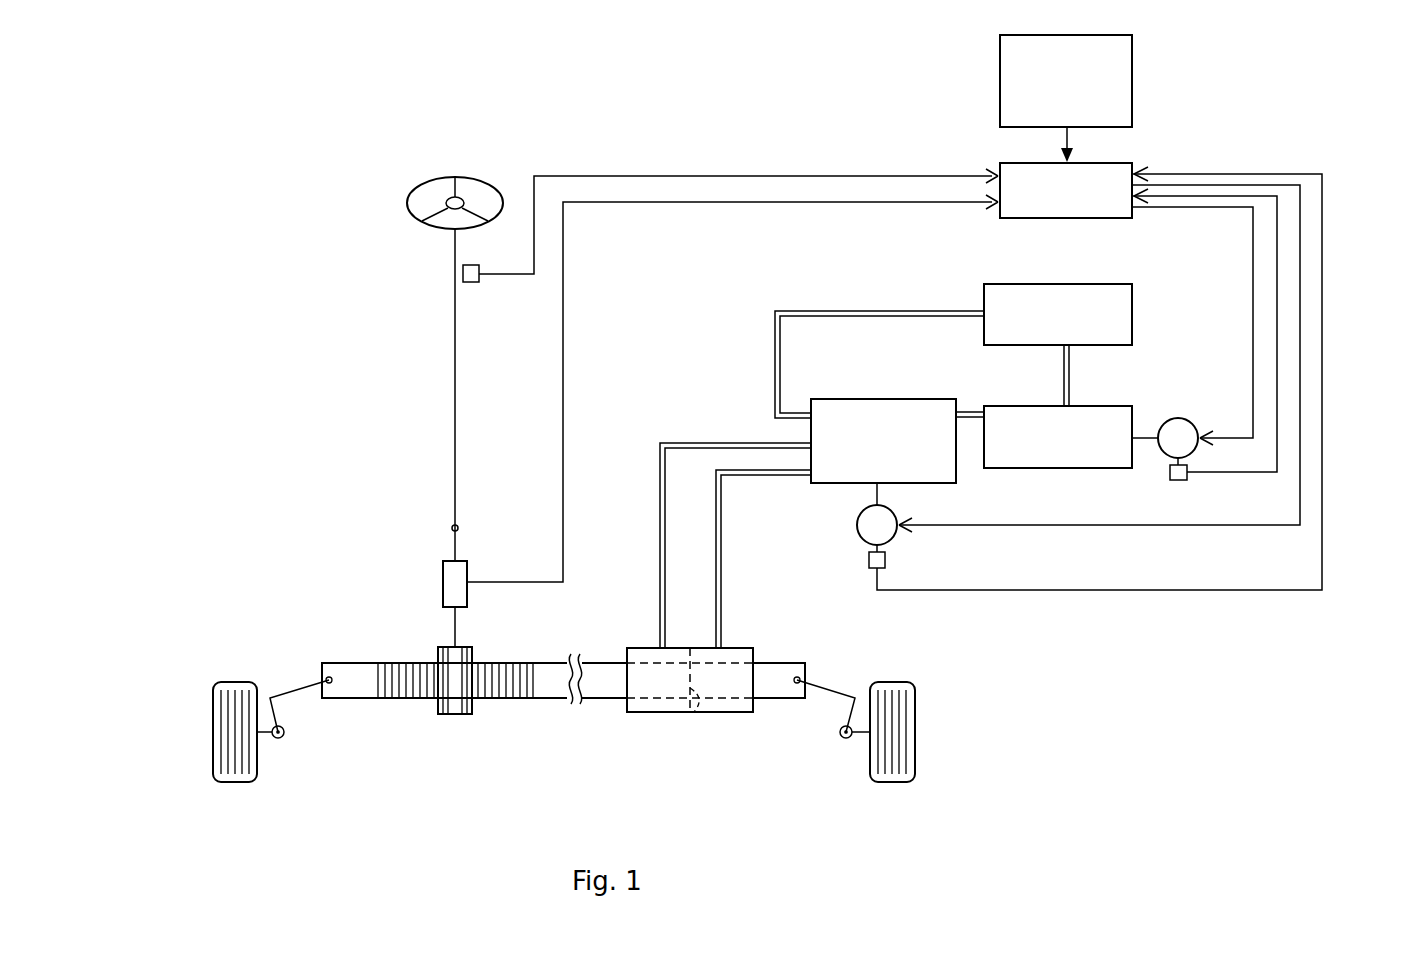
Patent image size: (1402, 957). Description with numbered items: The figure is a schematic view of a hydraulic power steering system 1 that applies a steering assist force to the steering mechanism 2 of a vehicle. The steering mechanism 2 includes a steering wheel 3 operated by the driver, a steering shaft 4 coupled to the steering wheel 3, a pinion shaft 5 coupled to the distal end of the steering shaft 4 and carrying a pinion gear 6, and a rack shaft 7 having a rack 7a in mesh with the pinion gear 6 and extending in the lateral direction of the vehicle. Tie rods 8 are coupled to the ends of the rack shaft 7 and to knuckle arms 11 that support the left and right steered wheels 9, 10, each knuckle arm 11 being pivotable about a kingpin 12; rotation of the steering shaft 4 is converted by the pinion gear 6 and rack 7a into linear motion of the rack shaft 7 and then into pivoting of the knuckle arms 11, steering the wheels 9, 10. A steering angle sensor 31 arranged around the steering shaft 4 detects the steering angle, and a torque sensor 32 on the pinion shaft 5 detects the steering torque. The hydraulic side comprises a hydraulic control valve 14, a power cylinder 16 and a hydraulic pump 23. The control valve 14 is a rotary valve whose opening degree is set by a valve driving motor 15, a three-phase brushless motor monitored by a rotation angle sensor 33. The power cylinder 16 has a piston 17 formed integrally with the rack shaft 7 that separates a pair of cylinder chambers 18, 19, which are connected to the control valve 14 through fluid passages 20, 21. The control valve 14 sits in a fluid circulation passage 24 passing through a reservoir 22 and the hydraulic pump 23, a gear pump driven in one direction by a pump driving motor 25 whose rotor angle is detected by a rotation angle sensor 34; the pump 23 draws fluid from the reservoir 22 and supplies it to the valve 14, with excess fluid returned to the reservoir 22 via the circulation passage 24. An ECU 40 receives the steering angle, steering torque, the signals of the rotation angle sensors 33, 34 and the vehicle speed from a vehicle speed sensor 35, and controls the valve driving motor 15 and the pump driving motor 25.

The hydraulic power steering system 1 is at (338, 154).
The steering mechanism 2 is at (563, 710).
The steering wheel 3 is at (407, 202).
The steering shaft 4 is at (454, 360).
The pinion shaft 5 is at (456, 542).
The pinion gear 6 is at (455, 714).
The rack shaft 7 is at (551, 698).
The rack 7a is at (403, 683).
The tie rods 8 is at (304, 692).
The left steered wheel 9 is at (233, 783).
The right steered wheel 10 is at (892, 783).
The knuckle arms 11 is at (276, 740).
The kingpins 12 is at (283, 738).
The hydraulic control valve 14 is at (920, 399).
The valve driving motor 15 is at (857, 525).
The power cylinder 16 is at (743, 648).
The piston 17 is at (690, 712).
The cylinder chamber 18 is at (652, 712).
The cylinder chamber 19 is at (732, 712).
The fluid passage 20 is at (660, 539).
The fluid passage 21 is at (721, 551).
The reservoir 22 is at (1108, 284).
The hydraulic pump 23 is at (1108, 406).
The fluid circulation passage 24 is at (775, 371).
The pump driving motor 25 is at (1178, 418).
The steering angle sensor 31 is at (470, 282).
The torque sensor 32 is at (443, 583).
The rotation angle sensor 33 is at (869, 560).
The rotation angle sensor 34 is at (1187, 480).
The vehicle speed sensor 35 is at (1132, 62).
The ECU 40 is at (1106, 163).